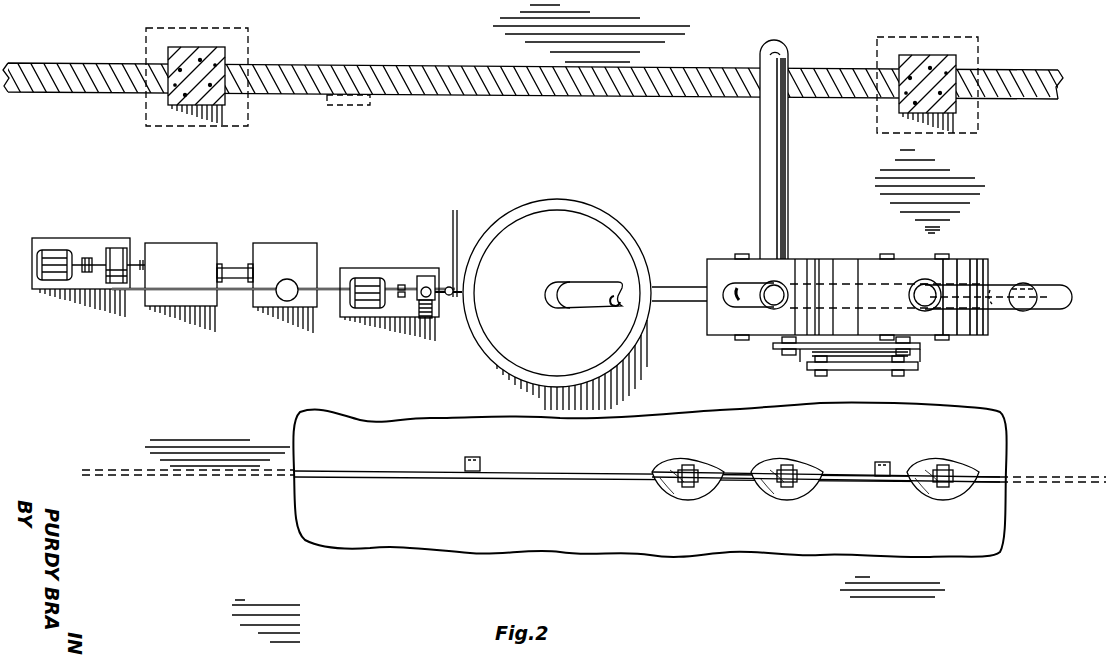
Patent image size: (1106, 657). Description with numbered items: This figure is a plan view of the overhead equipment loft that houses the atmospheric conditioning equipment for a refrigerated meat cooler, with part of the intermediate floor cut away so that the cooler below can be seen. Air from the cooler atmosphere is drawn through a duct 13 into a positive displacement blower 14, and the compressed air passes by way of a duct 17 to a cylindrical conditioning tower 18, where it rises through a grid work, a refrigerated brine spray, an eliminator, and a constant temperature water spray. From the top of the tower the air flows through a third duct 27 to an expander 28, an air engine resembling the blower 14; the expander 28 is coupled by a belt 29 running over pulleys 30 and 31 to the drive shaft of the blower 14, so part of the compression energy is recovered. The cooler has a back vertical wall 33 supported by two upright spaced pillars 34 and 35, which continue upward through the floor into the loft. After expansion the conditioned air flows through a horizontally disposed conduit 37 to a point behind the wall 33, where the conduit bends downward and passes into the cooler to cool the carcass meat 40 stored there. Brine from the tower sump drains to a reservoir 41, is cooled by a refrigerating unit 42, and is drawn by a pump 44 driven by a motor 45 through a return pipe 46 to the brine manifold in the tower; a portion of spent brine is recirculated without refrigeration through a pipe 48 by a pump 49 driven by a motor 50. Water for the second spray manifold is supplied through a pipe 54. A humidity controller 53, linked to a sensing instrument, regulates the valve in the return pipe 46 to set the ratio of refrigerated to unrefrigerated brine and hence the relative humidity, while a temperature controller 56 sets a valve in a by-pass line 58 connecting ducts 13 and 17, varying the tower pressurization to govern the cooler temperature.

The duct 13 is at (1068, 290).
The positive displacement blower 14 is at (995, 288).
The duct 17 is at (683, 303).
The cylindrical conditioning tower 18 is at (474, 338).
The third duct 27 is at (583, 282).
The expander 28 is at (718, 259).
The belt 29 is at (862, 345).
The pulley 30 is at (780, 349).
The pulley 31 is at (918, 357).
The back vertical wall 33 is at (825, 70).
The pillar 34 is at (225, 50).
The pillar 35 is at (956, 60).
The horizontally disposed conduit 37 is at (788, 192).
The carcass meat 40 is at (704, 498).
The reservoir 41 is at (192, 243).
The refrigerating unit 42 is at (283, 243).
The pump 44 is at (115, 248).
The motor 45 is at (57, 250).
The return pipe 46 is at (118, 292).
The pipe 48 is at (420, 318).
The pump 49 is at (428, 276).
The motor 50 is at (362, 312).
The humidity controller 53 is at (283, 300).
The pipe 54 is at (452, 230).
The temperature controller 56 is at (1025, 312).
The by-pass line 58 is at (997, 292).